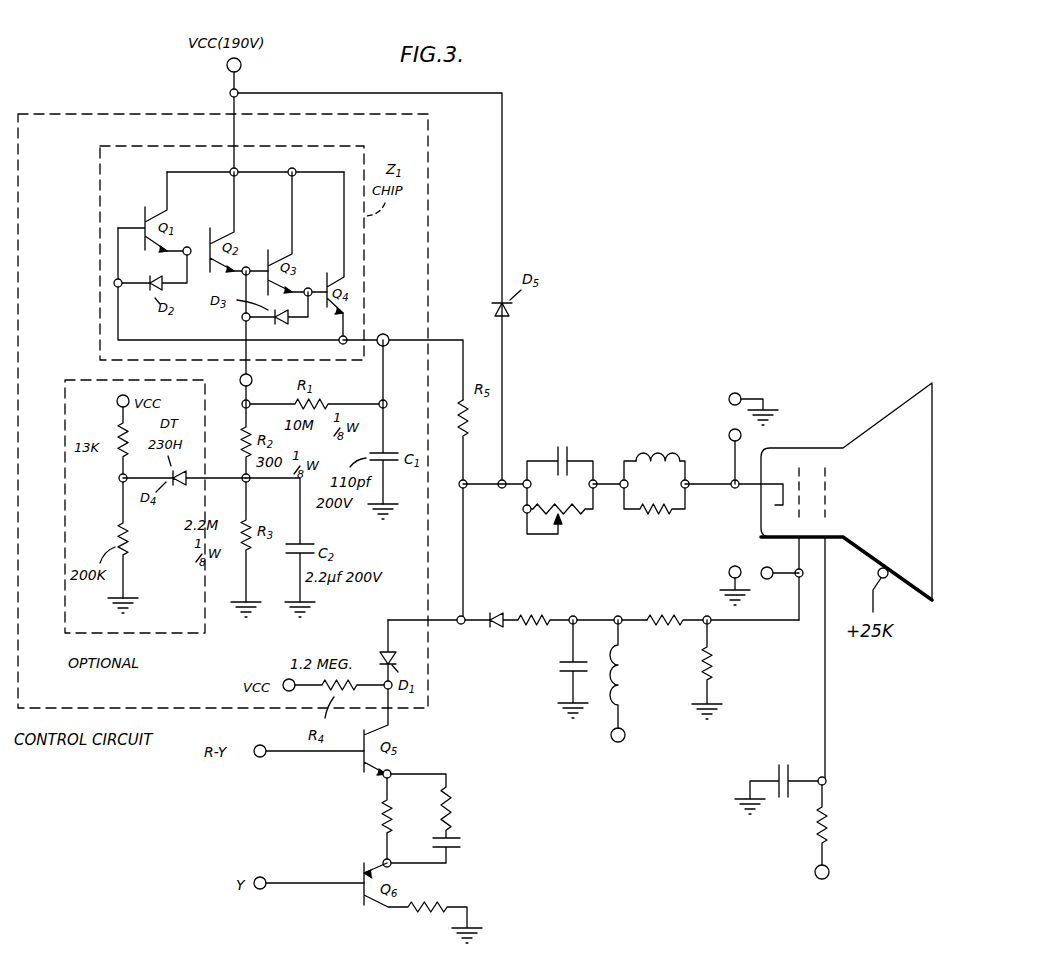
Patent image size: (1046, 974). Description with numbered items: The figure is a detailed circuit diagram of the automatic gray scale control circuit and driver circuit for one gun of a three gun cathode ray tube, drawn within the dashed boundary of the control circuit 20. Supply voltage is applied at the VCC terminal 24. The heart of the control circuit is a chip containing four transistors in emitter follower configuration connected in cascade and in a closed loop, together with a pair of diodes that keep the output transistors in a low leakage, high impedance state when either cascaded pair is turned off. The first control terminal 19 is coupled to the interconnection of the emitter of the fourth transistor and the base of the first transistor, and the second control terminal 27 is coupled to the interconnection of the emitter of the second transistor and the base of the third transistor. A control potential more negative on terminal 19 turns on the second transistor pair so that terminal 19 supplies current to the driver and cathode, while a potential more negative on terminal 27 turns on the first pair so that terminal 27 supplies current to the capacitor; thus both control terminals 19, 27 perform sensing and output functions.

The control circuit 20 is at (88, 108).
The VCC supply terminal 24 is at (214, 115).
The first control terminal 19 is at (386, 334).
The second control terminal 27 is at (252, 380).